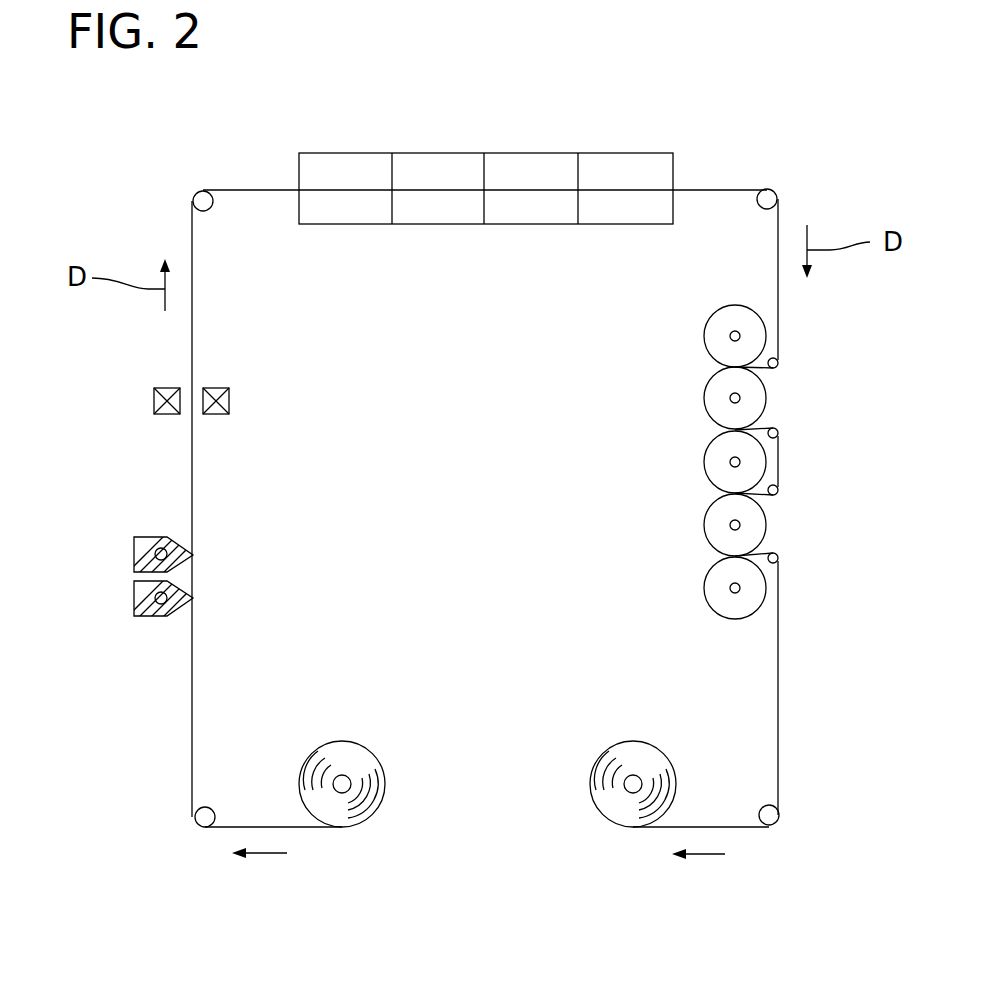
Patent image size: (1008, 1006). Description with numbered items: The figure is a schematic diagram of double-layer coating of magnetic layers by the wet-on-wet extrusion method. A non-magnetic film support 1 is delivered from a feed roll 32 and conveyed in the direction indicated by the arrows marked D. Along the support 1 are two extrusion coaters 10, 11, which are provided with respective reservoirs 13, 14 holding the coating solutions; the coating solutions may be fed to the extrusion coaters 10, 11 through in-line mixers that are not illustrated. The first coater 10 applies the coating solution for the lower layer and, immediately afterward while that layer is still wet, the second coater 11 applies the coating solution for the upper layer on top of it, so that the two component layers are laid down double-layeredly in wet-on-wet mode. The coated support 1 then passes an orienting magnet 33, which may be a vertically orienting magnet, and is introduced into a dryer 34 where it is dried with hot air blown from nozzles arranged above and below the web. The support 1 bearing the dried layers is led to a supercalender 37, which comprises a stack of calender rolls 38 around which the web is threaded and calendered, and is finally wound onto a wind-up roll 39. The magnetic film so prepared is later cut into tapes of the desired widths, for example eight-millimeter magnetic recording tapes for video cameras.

The film support 1 is at (195, 662).
The extrusion coater 10 is at (124, 640).
The extrusion coater 11 is at (124, 518).
The reservoir 13 is at (162, 606).
The reservoir 14 is at (163, 546).
The feed roll 32 is at (342, 775).
The orienting magnet 33 is at (229, 402).
The dryer 34 is at (471, 232).
The supercalender 37 is at (668, 461).
The rollers 38 is at (712, 337).
The wind-up roll 39 is at (633, 775).